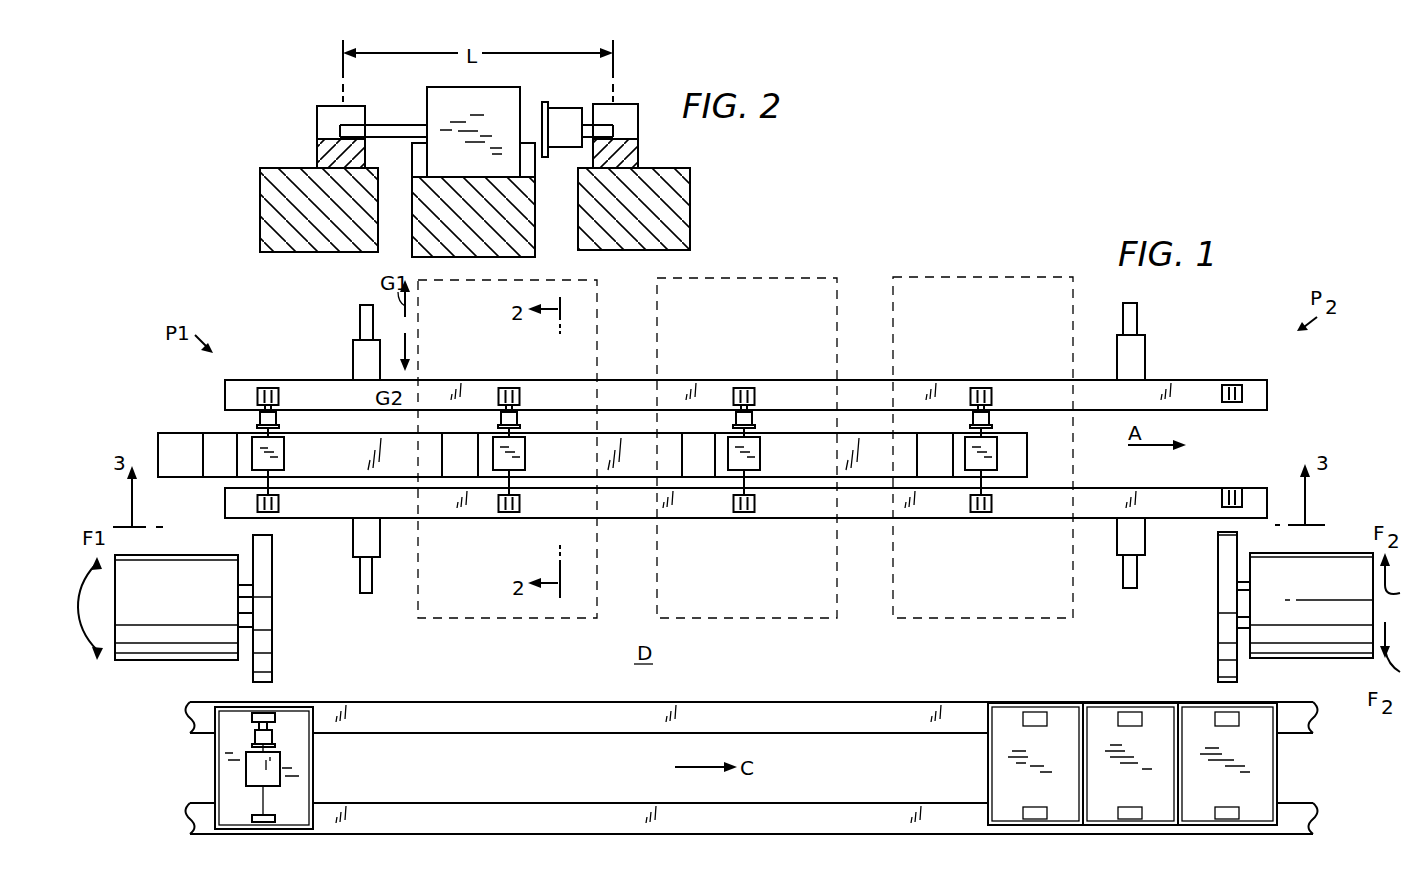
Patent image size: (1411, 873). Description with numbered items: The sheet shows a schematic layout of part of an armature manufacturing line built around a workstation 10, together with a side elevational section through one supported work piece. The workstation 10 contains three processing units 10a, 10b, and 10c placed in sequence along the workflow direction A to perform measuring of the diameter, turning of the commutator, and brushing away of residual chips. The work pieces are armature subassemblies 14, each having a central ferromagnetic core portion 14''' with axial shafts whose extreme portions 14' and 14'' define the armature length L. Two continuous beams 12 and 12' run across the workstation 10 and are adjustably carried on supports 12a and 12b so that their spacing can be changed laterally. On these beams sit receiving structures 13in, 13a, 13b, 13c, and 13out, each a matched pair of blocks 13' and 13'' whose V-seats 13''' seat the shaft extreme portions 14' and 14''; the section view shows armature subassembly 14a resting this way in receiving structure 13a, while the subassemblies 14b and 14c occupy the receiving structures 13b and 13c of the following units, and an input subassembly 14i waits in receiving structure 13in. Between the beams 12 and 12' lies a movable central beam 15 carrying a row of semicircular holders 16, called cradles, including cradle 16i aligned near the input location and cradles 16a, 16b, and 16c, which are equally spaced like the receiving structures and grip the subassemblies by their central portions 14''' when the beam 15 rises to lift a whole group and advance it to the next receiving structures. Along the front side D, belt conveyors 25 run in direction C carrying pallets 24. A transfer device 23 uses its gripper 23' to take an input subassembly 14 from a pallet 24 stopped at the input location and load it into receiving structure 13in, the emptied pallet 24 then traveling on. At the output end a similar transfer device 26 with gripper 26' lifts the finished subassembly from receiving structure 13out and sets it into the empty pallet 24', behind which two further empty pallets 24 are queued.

In FIG. 1, the workstation 10 is at (754, 679).
In FIG. 1, the processing unit 10a is at (542, 605).
In FIG. 1, the processing unit 10b is at (798, 602).
In FIG. 1, the processing unit 10c is at (1060, 608).
In FIG. 2, the beam 12 is at (298, 195).
In FIG. 1, the beam 12 is at (746, 524).
In FIG. 2, the beam 12' is at (672, 209).
In FIG. 1, the beam 12' is at (780, 384).
In FIG. 1, the support 12a is at (363, 330).
In FIG. 1, the support 12b is at (376, 550).
In FIG. 2, the block 13' is at (313, 143).
In FIG. 2, the block 13'' is at (649, 149).
In FIG. 2, the V-seat 13''' is at (473, 99).
In FIG. 1, the receiving structure 13in is at (275, 395).
In FIG. 1, the receiving structure 13out is at (1245, 390).
In FIG. 1, the receiving structure 13a is at (520, 398).
In FIG. 1, the receiving structure 13b is at (756, 396).
In FIG. 1, the receiving structure 13c is at (993, 396).
In FIG. 1, the armature subassembly 14 is at (225, 767).
In FIG. 2, the extreme portion 14' is at (383, 110).
In FIG. 2, the extreme portion 14'' is at (645, 104).
In FIG. 2, the central ferromagnetic core portion 14''' is at (507, 117).
In FIG. 2, the armature subassembly 14a is at (500, 70).
In FIG. 1, the armature subassembly 14a is at (527, 455).
In FIG. 1, the gear at second station 14b is at (762, 455).
In FIG. 1, the gear at third station 14c is at (999, 450).
In FIG. 1, the subassembly 14i is at (285, 455).
In FIG. 2, the central beam 15 is at (530, 229).
In FIG. 1, the central beam 15 is at (168, 438).
In FIG. 2, the holder 16 is at (528, 164).
In FIG. 1, the inlet rail segment 16i is at (222, 435).
In FIG. 1, the cradle 16a is at (455, 440).
In FIG. 1, the cradle 16b is at (703, 450).
In FIG. 1, the cradle 16c is at (944, 440).
In FIG. 1, the transfer device 23 is at (184, 630).
In FIG. 1, the gripper 23' is at (292, 608).
In FIG. 1, the pallet 24 is at (696, 749).
In FIG. 1, the empty pallet 24' is at (1258, 764).
In FIG. 1, the belt conveyor 25 is at (530, 818).
In FIG. 1, the transfer device 26 is at (1305, 589).
In FIG. 1, the gripper 26' is at (1206, 607).